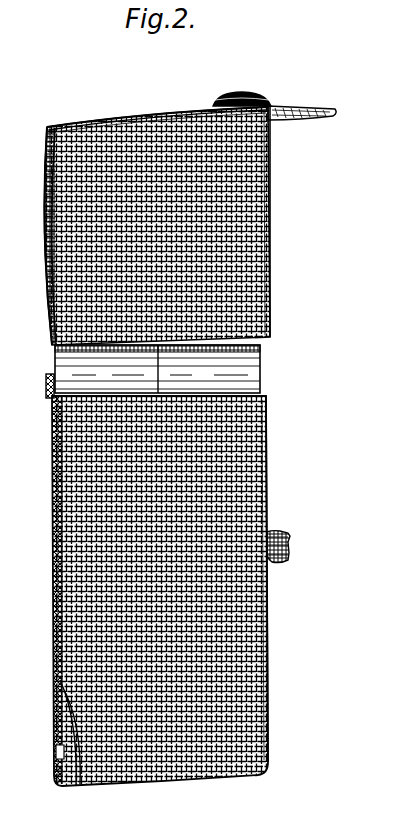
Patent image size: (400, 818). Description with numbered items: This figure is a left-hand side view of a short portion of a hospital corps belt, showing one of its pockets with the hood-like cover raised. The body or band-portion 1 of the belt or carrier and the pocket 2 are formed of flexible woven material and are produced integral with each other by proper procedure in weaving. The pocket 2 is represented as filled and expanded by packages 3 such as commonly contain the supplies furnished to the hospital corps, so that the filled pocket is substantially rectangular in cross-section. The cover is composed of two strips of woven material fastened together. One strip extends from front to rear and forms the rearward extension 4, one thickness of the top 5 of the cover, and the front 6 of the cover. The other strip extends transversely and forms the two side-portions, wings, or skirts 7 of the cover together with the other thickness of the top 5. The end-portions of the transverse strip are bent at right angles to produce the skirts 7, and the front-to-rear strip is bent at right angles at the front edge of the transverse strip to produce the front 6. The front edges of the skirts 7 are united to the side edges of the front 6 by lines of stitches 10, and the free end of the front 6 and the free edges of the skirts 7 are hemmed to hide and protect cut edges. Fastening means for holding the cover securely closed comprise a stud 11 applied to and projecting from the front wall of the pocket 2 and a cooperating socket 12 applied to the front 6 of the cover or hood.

The body or band-portion 1 is at (52, 520).
The pocket 2 is at (268, 462).
The packages 3 is at (157, 369).
The rearward extension 4 is at (50, 374).
The top 5 is at (43, 270).
The front 6 is at (133, 122).
The side-portions, wings, or skirts 7 is at (228, 256).
The lines of stitches 10 is at (92, 130).
The stud 11 is at (292, 549).
The socket 12 is at (248, 92).